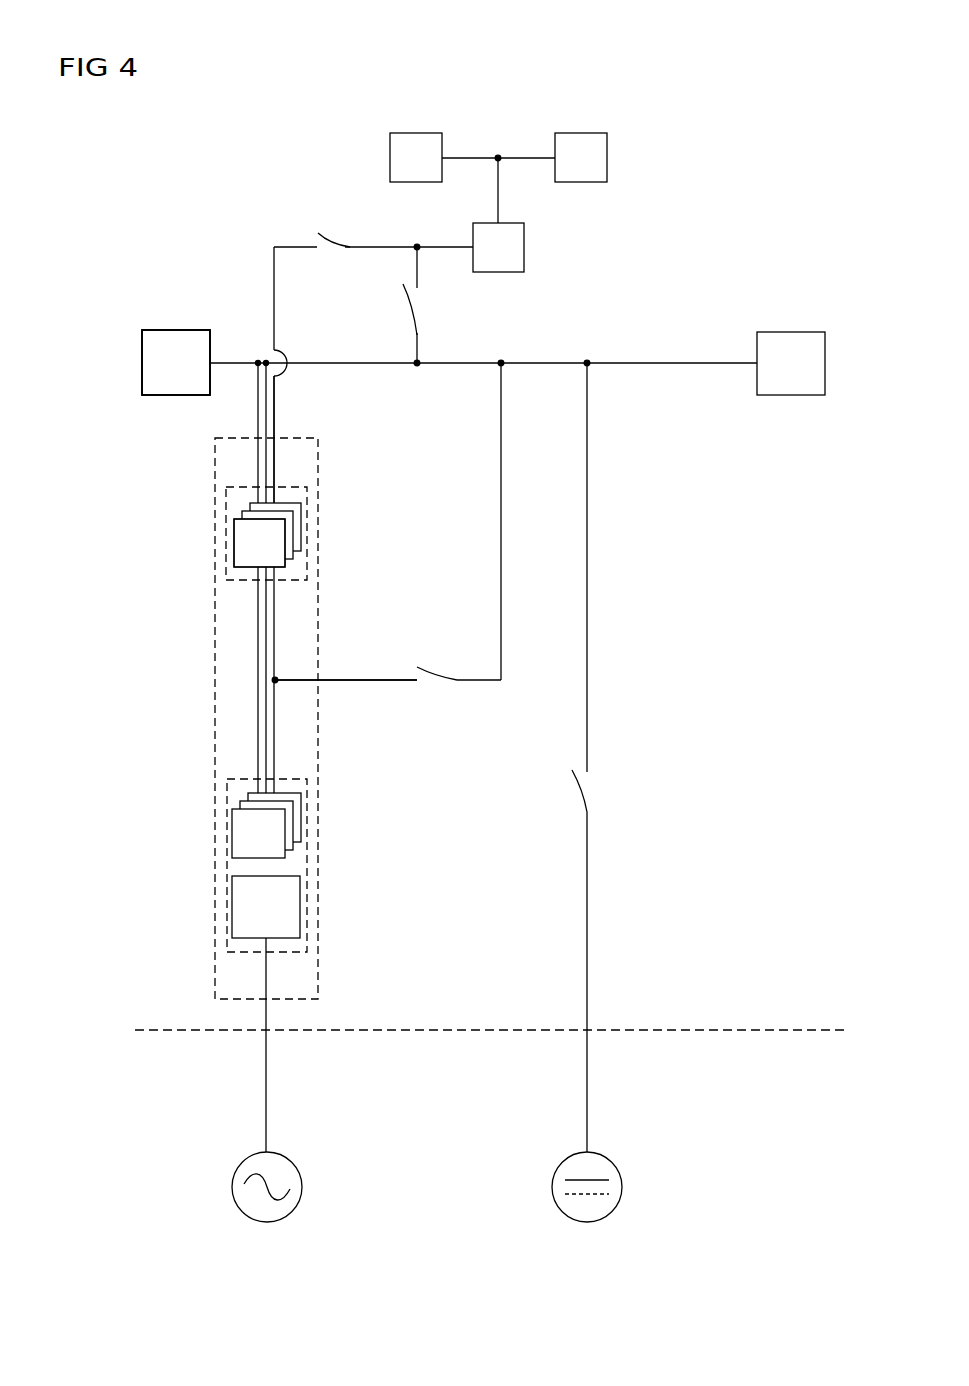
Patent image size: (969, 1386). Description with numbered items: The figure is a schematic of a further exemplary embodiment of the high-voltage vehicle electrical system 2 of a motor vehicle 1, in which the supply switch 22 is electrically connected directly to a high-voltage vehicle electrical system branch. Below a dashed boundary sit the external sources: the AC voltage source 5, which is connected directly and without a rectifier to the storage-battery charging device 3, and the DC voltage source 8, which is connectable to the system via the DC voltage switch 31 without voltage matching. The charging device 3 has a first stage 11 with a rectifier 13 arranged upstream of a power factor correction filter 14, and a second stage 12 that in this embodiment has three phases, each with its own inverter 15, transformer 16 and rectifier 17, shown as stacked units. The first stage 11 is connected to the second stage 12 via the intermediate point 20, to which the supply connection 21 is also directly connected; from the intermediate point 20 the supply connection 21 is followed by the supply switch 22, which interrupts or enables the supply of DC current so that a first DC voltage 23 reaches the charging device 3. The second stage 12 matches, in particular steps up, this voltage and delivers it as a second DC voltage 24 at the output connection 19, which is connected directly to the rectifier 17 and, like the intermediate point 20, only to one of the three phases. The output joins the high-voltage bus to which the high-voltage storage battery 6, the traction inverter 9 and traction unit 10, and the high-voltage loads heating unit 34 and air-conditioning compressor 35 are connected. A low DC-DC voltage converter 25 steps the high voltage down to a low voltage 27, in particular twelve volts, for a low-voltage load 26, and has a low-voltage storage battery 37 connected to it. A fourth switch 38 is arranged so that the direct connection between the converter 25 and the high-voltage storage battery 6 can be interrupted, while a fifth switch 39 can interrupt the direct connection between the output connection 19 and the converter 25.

The motor vehicle 1 is at (803, 992).
The high-voltage vehicle electrical system 2 is at (720, 724).
The storage-battery charging device 3 is at (215, 972).
The AC voltage source 5 is at (267, 1222).
The high-voltage storage battery 6 is at (790, 332).
The DC voltage source 8 is at (587, 1222).
The traction inverter 9 is at (160, 325).
The traction unit 10 is at (192, 325).
The first stage 11 is at (232, 830).
The second stage 12 is at (234, 532).
The rectifier 13 is at (232, 905).
The power factor correction filter 14 is at (297, 850).
The inverter 15 is at (233, 500).
The transformer 16 is at (226, 511).
The rectifier 17 is at (223, 523).
The output connection 19 is at (270, 503).
The intermediate point 20 is at (278, 682).
The supply connection 21 is at (333, 672).
The supply switch 22 is at (450, 680).
The first DC voltage 23 is at (333, 688).
The second DC voltage 24 is at (297, 478).
The low DC-DC voltage converter 25 is at (524, 243).
The low-voltage load 26 is at (607, 155).
The low voltage 27 is at (507, 148).
The DC voltage switch 31 is at (580, 795).
The heating unit 34 is at (210, 325).
The air-conditioning compressor 35 is at (140, 325).
The low-voltage storage battery 37 is at (390, 158).
The fourth switch 38 is at (400, 297).
The fifth switch 39 is at (318, 233).